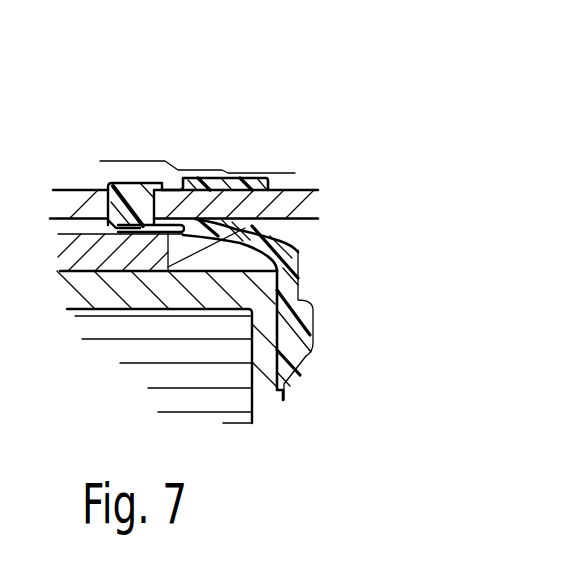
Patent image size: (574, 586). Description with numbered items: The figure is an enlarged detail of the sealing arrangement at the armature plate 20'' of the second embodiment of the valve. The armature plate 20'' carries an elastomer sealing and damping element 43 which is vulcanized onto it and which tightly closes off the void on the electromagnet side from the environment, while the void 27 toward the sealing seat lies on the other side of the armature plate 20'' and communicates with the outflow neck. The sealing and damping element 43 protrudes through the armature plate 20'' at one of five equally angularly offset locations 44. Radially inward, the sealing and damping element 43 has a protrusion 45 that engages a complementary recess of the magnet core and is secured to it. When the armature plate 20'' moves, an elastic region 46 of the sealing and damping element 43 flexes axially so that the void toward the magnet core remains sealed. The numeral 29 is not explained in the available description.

The armature plate 20'' is at (234, 138).
The void toward the sealing seat 27 is at (208, 257).
The plate 29 is at (287, 223).
The sealing and damping element 43 is at (298, 334).
The locations 44 is at (128, 188).
The protrusion 45 is at (312, 349).
The elastic region 46 is at (142, 271).